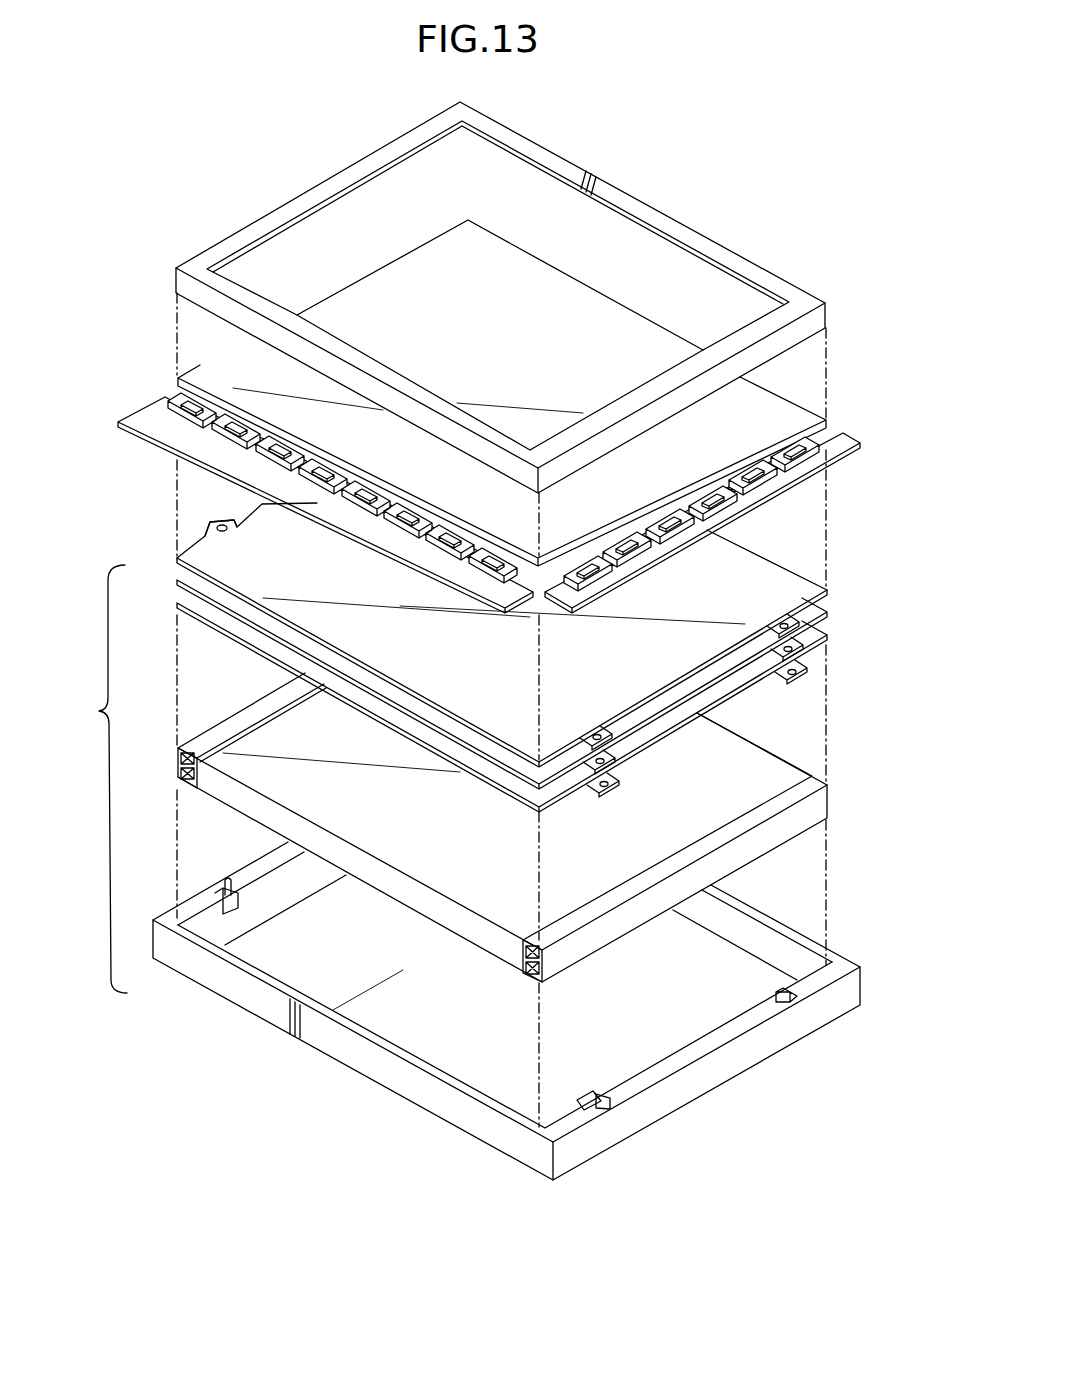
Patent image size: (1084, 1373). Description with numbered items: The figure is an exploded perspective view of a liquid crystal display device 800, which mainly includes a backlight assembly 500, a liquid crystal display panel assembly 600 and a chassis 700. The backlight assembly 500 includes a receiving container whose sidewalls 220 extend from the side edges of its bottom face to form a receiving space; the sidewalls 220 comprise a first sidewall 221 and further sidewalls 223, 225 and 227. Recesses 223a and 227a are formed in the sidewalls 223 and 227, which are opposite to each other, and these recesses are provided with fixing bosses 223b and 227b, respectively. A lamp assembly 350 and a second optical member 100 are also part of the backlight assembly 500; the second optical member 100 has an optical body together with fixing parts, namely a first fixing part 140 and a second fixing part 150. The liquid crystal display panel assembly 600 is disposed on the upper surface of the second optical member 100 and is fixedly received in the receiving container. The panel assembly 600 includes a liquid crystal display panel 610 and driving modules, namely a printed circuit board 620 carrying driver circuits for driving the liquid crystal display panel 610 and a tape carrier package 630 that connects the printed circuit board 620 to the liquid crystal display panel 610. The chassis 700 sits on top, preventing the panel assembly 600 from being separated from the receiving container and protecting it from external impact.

The liquid crystal display device 800 is at (672, 189).
The chassis 700 is at (838, 311).
The liquid crystal display panel assembly 600 is at (525, 462).
The liquid crystal display panel 610 is at (756, 408).
The printed circuit board 620 is at (158, 413).
The tape carrier package 630 is at (180, 390).
The second optical member 100 is at (533, 634).
The first fixing part 140 is at (802, 684).
The second fixing part 150 is at (206, 521).
The lamp assembly 350 is at (845, 803).
The backlight assembly 500 is at (92, 779).
The sidewalls 220 is at (524, 1018).
The first sidewall 221 is at (748, 930).
The sidewall 223 is at (203, 922).
The recess 223a is at (215, 889).
The fixing boss 223b is at (237, 886).
The sidewall 225 is at (392, 1086).
The sidewall 227 is at (519, 1071).
The recess 227a is at (612, 1106).
The fixing boss 227b is at (586, 1104).